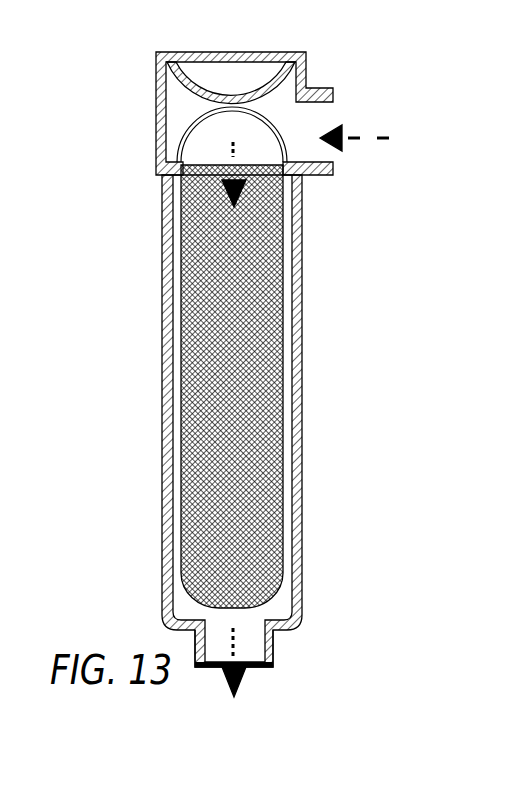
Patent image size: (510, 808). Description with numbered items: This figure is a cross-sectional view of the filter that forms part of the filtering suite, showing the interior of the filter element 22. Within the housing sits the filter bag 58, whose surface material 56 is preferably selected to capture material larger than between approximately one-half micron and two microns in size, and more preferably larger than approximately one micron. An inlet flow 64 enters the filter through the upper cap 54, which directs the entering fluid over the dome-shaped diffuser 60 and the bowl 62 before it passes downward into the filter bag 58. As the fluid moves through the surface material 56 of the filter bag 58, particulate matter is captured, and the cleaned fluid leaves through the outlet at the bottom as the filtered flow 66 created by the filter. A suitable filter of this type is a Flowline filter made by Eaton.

The filter element 22 is at (135, 118).
The cap / inlet housing 54 is at (327, 127).
The surface material 56 is at (273, 593).
The filter bag 58 is at (285, 370).
The dome 60 is at (263, 100).
The bowl / diffuser 62 is at (200, 86).
The inlet flow 64 is at (357, 140).
The filtered flow 66 is at (250, 668).